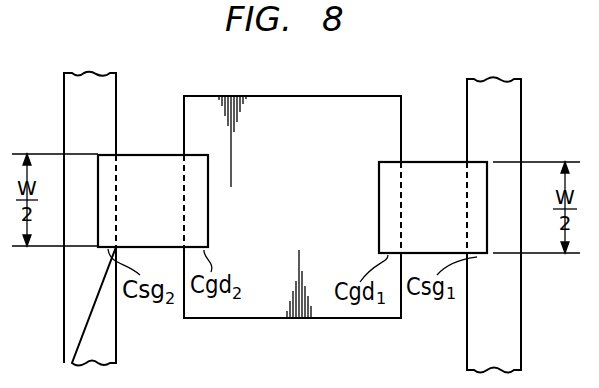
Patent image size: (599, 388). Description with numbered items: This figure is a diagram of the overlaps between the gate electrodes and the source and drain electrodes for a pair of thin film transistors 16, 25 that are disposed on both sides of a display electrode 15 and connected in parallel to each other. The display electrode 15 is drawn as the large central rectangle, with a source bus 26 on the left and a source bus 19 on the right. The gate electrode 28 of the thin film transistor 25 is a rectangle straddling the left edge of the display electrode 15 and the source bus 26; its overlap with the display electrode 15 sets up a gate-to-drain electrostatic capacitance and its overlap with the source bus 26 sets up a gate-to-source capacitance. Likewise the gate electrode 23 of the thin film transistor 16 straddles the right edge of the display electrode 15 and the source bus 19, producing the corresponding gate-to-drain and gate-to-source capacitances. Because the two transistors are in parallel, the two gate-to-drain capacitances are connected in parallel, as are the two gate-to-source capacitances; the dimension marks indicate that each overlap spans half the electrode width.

The display electrode 15 is at (357, 104).
The thin film transistor 16 is at (433, 152).
The source bus 19 is at (521, 120).
The gate electrode 23 is at (433, 188).
The thin film transistor 25 is at (153, 145).
The source bus 26 is at (64, 112).
The gate electrode 28 is at (153, 183).